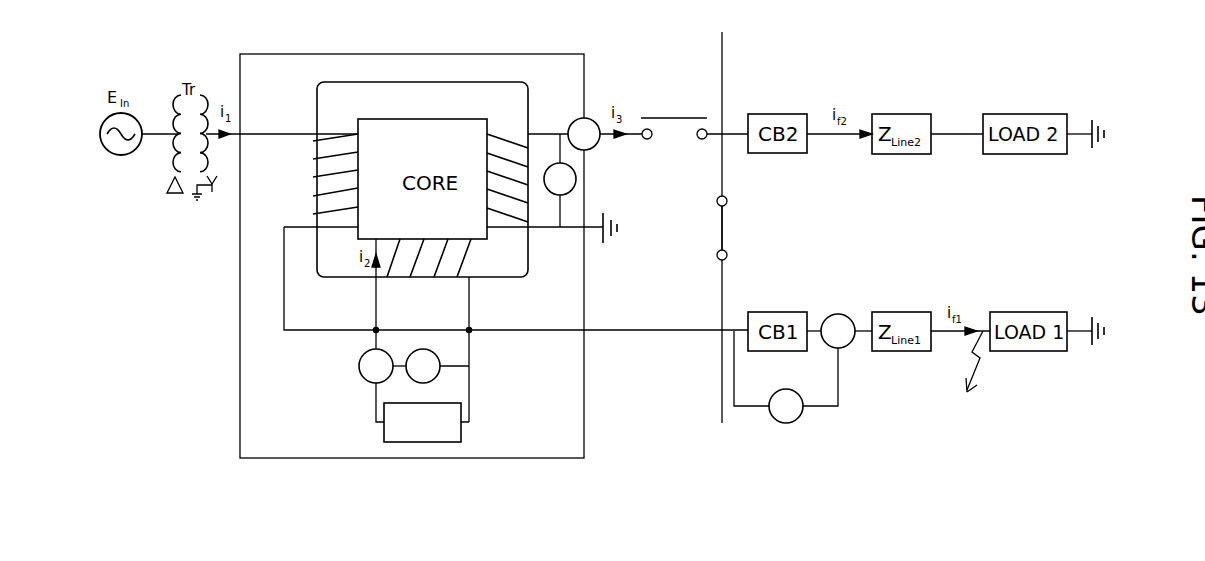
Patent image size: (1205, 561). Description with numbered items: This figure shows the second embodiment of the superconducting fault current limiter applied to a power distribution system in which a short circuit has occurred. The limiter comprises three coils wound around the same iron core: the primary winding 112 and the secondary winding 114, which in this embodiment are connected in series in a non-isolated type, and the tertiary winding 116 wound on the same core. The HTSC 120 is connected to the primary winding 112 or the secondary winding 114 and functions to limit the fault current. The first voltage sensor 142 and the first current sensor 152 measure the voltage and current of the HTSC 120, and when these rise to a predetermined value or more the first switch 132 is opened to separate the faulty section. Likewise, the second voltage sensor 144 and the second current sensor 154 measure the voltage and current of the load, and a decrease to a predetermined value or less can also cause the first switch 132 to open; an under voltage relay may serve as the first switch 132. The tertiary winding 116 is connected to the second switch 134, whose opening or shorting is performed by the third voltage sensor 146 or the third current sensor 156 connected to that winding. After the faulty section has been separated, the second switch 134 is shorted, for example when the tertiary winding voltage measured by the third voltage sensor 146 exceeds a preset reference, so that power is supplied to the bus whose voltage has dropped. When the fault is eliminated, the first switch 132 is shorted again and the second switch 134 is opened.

The primary winding 112 is at (320, 195).
The secondary winding 114 is at (400, 233).
The tertiary winding 116 is at (485, 150).
The HTSC 120 is at (421, 443).
The first switch 132 is at (740, 228).
The second switch 134 is at (641, 113).
The first voltage sensor 142 is at (421, 348).
The second voltage sensor 144 is at (786, 423).
The third voltage sensor 146 is at (576, 180).
The first current sensor 152 is at (358, 369).
The second current sensor 154 is at (848, 344).
The third current sensor 156 is at (578, 120).